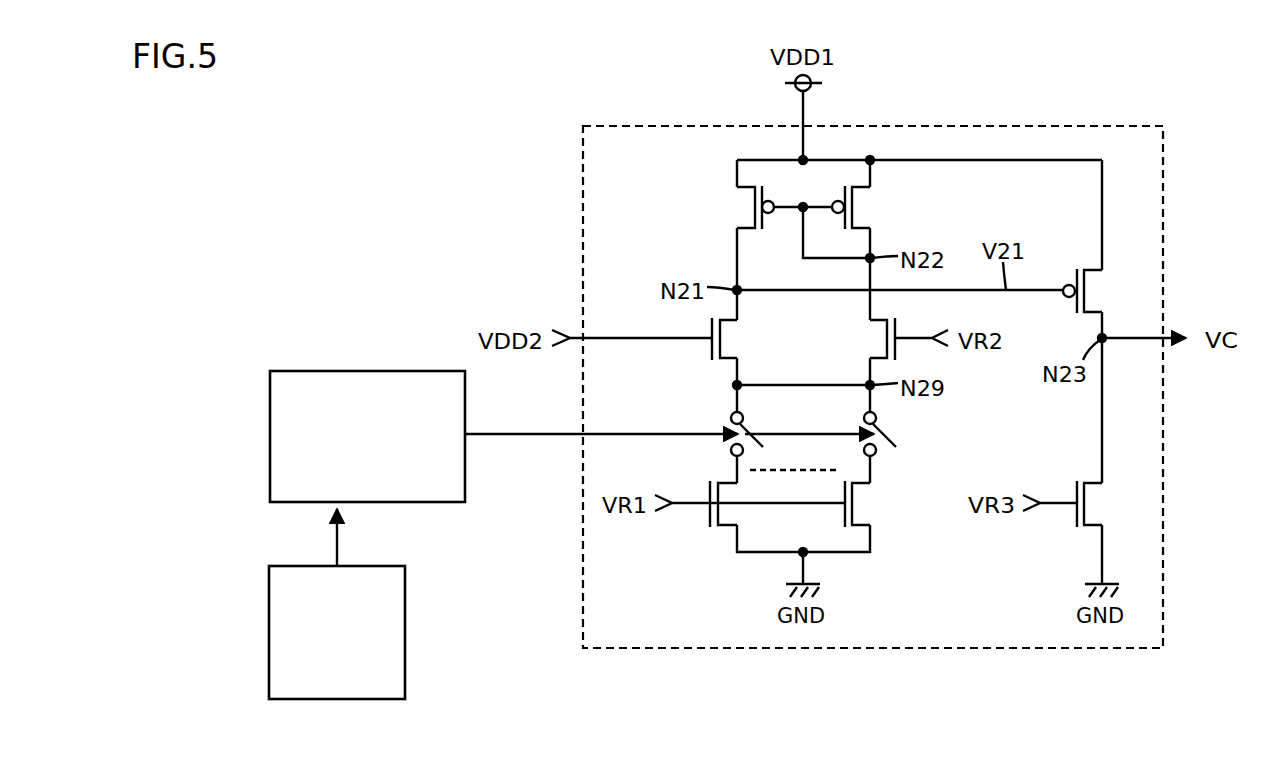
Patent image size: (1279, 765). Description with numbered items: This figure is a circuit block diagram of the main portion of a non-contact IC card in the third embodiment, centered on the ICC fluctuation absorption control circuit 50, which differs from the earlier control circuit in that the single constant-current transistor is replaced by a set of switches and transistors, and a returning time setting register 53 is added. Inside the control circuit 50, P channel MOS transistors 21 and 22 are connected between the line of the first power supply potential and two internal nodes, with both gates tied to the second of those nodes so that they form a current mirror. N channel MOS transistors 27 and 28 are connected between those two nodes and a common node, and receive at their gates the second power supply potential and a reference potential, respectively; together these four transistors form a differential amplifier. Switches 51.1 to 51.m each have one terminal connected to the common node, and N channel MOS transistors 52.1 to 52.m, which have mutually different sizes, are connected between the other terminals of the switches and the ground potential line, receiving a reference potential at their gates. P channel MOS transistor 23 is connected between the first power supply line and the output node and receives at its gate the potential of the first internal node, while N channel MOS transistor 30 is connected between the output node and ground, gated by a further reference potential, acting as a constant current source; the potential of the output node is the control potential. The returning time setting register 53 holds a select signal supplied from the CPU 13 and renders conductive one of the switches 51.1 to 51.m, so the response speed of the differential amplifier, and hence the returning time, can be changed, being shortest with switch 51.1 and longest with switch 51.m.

The ICC fluctuation absorption control circuit 50 is at (587, 111).
The P channel MOS transistor 21 is at (738, 211).
The P channel MOS transistor 22 is at (872, 211).
The P channel MOS transistor 23 is at (1095, 292).
The N channel MOS transistor 27 is at (728, 338).
The N channel MOS transistor 28 is at (880, 338).
The N channel MOS transistor 30 is at (1095, 505).
The switch 51.1 is at (752, 430).
The switch 51.m is at (892, 430).
The N channel MOS transistor 52.1 is at (728, 528).
The N channel MOS transistor 52.m is at (858, 505).
The returning time setting register 53 is at (268, 437).
The CPU 13 is at (268, 634).